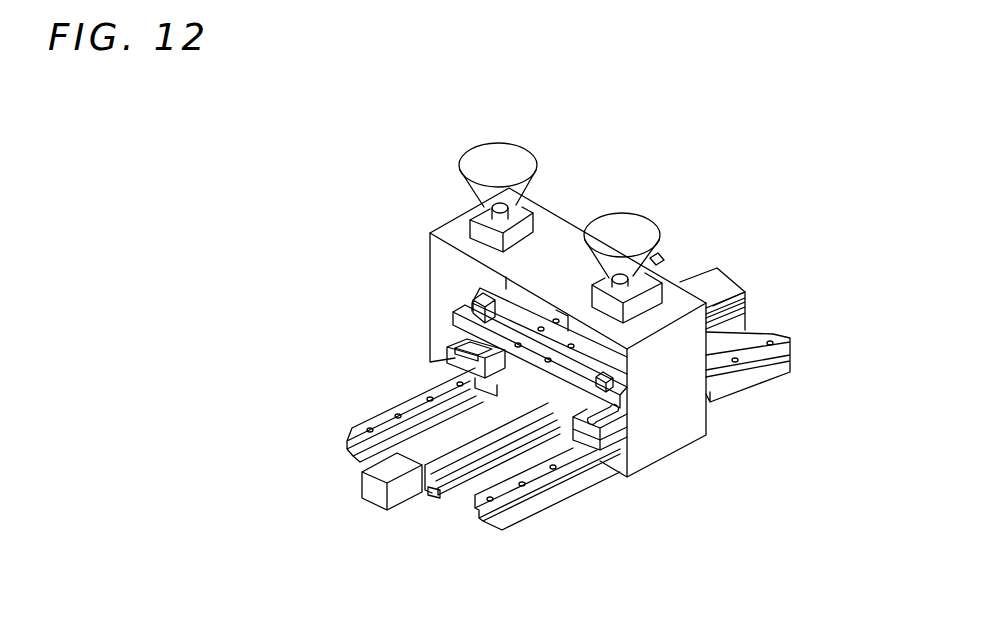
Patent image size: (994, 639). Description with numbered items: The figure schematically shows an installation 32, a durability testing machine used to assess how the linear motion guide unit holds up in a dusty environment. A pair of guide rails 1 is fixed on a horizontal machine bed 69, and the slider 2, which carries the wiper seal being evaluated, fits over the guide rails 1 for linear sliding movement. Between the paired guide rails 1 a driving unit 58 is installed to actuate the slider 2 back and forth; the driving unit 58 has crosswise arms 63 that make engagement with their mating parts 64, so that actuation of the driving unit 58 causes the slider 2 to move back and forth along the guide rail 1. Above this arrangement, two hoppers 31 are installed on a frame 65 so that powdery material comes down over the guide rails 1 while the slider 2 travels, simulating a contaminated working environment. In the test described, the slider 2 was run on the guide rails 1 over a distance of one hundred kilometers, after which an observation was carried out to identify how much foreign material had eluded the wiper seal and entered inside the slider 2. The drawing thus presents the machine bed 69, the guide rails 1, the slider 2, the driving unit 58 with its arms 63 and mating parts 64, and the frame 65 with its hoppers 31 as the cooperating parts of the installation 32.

The guide rail 1 is at (385, 420).
The slider 2 is at (457, 356).
The hopper 31 is at (493, 153).
The installation 32 is at (585, 193).
The driving unit 58 is at (440, 448).
The crosswise arm 63 is at (529, 323).
The mating part 64 is at (474, 303).
The frame 65 is at (440, 256).
The horizontal machine bed 69 is at (737, 336).